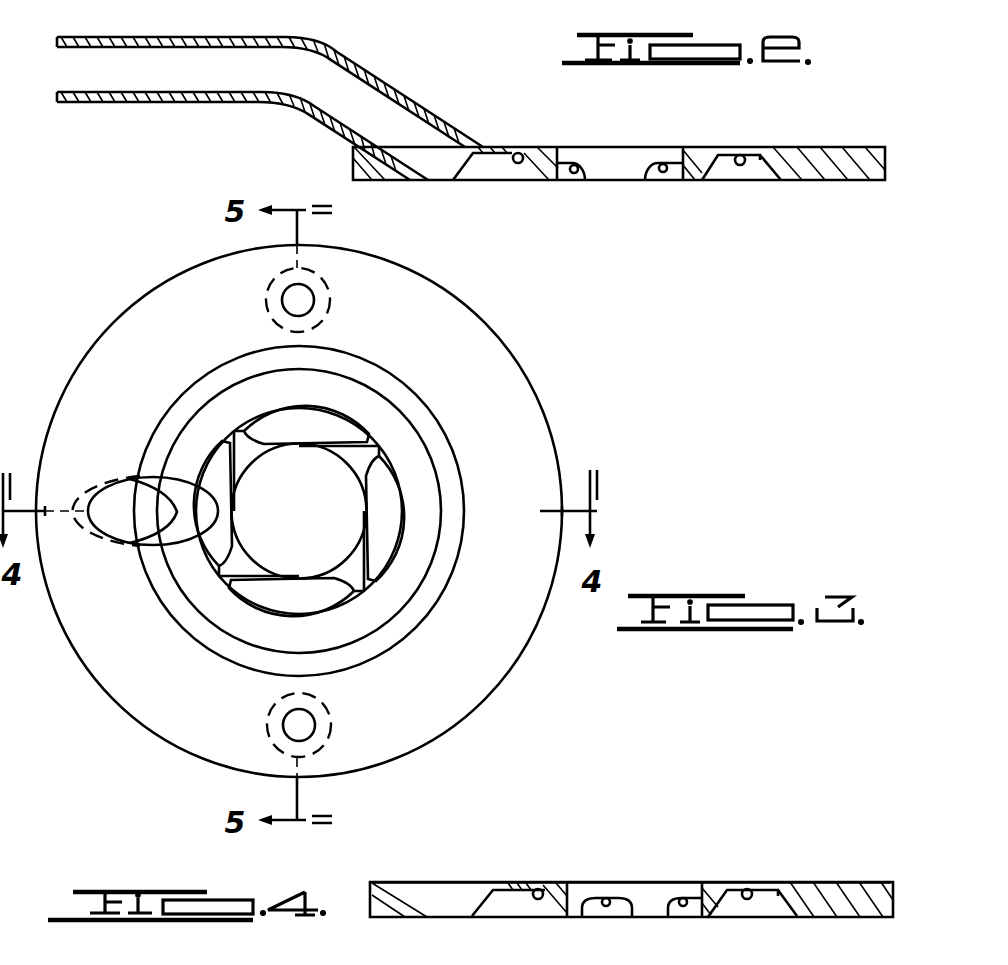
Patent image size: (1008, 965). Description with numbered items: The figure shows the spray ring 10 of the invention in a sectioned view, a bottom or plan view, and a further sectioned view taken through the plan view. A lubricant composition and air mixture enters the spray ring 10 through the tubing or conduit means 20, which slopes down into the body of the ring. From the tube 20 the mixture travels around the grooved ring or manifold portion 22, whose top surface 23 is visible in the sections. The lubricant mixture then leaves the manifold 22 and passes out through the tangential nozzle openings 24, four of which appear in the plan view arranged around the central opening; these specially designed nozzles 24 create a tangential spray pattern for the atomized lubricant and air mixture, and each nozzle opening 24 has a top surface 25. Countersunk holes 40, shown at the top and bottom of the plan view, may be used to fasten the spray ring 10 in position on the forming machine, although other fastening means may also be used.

In FIG. 3, the spray ring 10 is at (529, 333).
In FIG. 4, the spray ring 10 is at (631, 924).
In FIG. 2, the tubing or conduit means 20 is at (70, 104).
In FIG. 2, the grooved ring or manifold portion 22 is at (522, 152).
In FIG. 3, the grooved ring or manifold portion 22 is at (185, 410).
In FIG. 4, the grooved ring or manifold portion 22 is at (537, 890).
In FIG. 2, the top surface of the manifold 23 is at (741, 153).
In FIG. 3, the top surface of the manifold 23 is at (230, 405).
In FIG. 4, the top surface of the manifold 23 is at (747, 889).
In FIG. 2, the tangential nozzle openings 24 is at (566, 181).
In FIG. 3, the tangential nozzle openings 24 is at (353, 568).
In FIG. 4, the tangential nozzle openings 24 is at (600, 918).
In FIG. 2, the top surface of the nozzle opening 25 is at (576, 166).
In FIG. 4, the top surface of the nozzle opening 25 is at (607, 899).
In FIG. 3, the countersunk holes 40 is at (333, 301).